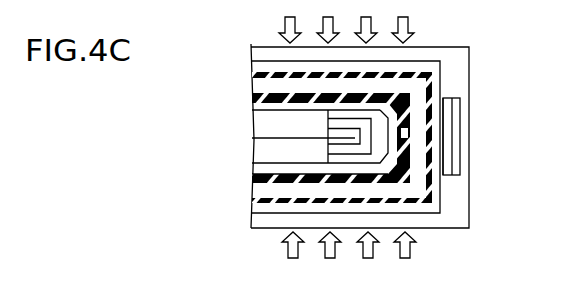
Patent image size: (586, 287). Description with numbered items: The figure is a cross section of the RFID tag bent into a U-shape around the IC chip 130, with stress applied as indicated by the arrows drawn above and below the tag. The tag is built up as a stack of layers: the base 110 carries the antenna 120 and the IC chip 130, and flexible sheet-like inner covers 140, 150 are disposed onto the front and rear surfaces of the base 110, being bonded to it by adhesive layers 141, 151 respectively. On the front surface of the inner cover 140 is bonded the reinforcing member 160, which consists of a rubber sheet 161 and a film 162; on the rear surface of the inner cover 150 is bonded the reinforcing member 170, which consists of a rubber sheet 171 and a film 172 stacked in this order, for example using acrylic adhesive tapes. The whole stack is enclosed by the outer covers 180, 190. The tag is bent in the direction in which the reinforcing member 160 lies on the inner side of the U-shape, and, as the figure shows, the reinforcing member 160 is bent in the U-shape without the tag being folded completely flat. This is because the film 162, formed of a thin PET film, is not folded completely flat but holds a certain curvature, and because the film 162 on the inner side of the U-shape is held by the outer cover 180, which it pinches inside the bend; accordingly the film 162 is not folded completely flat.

The base 110 is at (338, 136).
The antenna 120 is at (259, 183).
The IC chip 130 is at (405, 129).
The inner cover 140 is at (274, 144).
The adhesive layer 141 is at (259, 178).
The inner cover 150 is at (300, 150).
The adhesive layer 151 is at (259, 202).
The reinforcing member 160 is at (265, 116).
The rubber sheet 161 is at (293, 110).
The film 162 is at (328, 128).
The reinforcing member 170 is at (506, 157).
The rubber sheet 171 is at (447, 176).
The film 172 is at (461, 176).
The outer cover 180 is at (257, 152).
The outer cover 190 is at (252, 226).